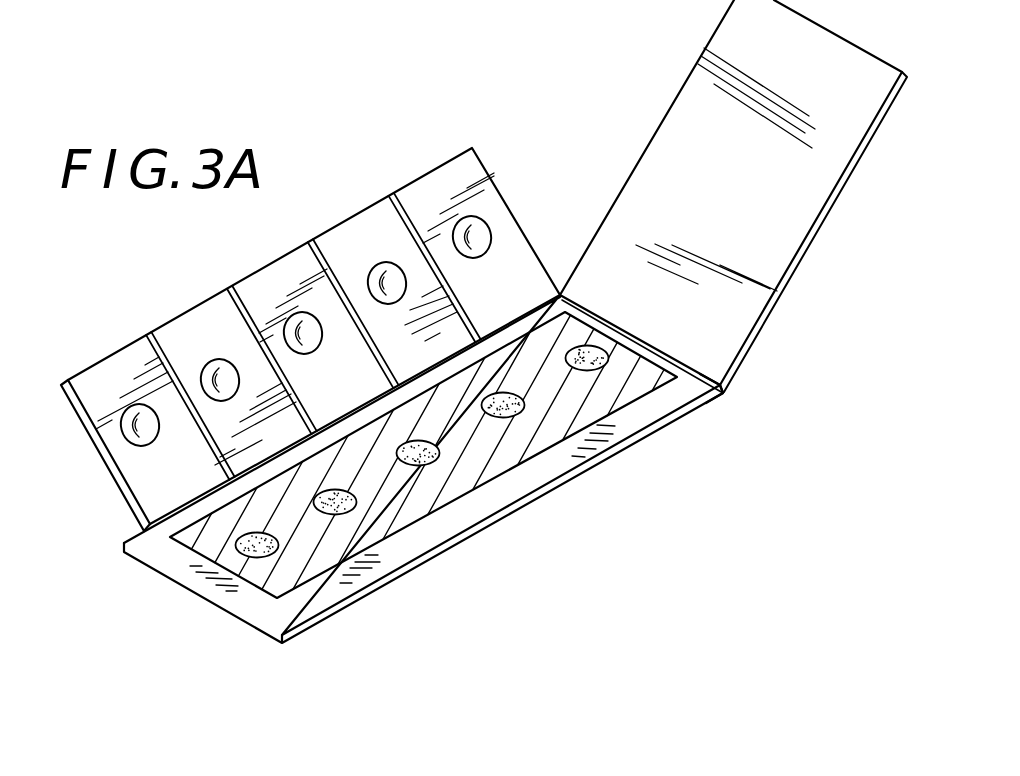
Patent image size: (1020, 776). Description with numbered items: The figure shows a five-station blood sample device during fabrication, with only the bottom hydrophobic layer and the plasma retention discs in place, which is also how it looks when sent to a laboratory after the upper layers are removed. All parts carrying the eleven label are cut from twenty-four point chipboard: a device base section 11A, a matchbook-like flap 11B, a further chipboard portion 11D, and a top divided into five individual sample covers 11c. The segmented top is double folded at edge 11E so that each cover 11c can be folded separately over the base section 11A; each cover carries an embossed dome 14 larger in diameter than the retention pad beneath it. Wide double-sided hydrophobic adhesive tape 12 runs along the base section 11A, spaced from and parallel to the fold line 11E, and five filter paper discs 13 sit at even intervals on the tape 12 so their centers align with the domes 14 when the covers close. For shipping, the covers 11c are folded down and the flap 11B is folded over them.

The device base section 11A is at (603, 469).
The flap 11B is at (758, 341).
The sample cover 11c is at (346, 212).
The hinge edge of base 11D is at (730, 401).
The fold line 11E is at (140, 526).
The hydrophobic adhesive tape 12 is at (312, 593).
The filter paper disc 13 is at (359, 518).
The dome 14 is at (495, 223).